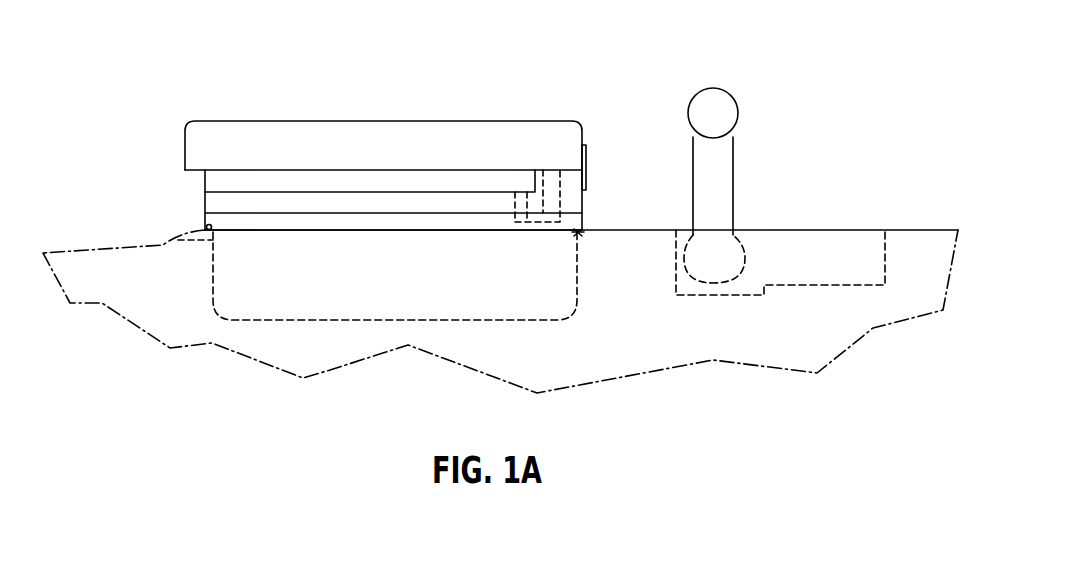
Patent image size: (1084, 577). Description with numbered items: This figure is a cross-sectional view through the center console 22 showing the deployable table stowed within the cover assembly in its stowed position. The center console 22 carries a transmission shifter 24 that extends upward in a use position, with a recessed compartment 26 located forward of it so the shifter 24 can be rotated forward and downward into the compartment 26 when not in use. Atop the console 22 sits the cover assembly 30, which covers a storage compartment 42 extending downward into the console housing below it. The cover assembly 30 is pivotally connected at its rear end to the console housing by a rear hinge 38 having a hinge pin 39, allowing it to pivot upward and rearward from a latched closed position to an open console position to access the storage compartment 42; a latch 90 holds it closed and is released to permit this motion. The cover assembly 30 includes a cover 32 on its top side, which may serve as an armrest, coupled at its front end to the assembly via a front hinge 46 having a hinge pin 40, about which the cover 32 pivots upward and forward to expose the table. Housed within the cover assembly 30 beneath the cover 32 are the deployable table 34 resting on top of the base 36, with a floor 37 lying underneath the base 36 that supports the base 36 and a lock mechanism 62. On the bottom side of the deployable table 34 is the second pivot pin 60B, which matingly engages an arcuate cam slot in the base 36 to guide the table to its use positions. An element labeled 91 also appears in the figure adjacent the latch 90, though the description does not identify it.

The center console 22 is at (898, 230).
The transmission shifter 24 is at (725, 92).
The recessed compartment 26 is at (817, 238).
The cover assembly 30 is at (395, 132).
The cover 32 is at (233, 121).
The deployable table 34 is at (288, 183).
The base 36 is at (340, 198).
The floor 37 is at (395, 223).
The rear hinge 38 is at (178, 240).
The hinge pin 39 is at (200, 228).
The hinge pin 40 is at (583, 172).
The storage compartment 42 is at (253, 285).
The front hinge 46 is at (587, 150).
The second pivot pin 60B is at (522, 203).
The lock mechanism 62 is at (530, 176).
The latch 90 is at (577, 233).
The second gap region 91 is at (578, 233).